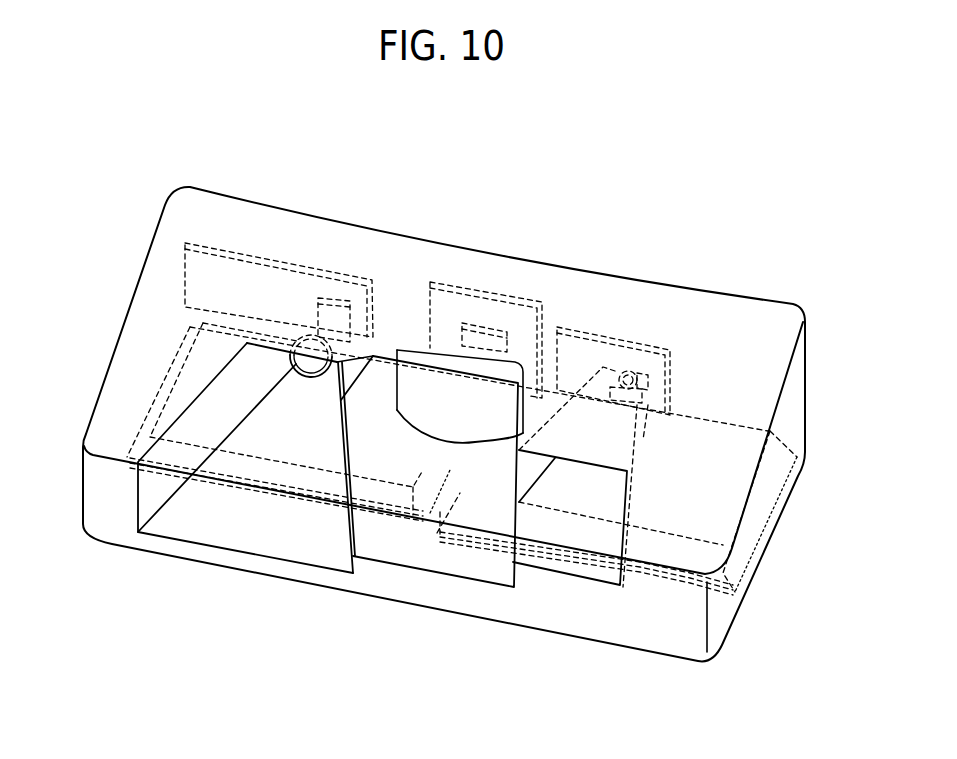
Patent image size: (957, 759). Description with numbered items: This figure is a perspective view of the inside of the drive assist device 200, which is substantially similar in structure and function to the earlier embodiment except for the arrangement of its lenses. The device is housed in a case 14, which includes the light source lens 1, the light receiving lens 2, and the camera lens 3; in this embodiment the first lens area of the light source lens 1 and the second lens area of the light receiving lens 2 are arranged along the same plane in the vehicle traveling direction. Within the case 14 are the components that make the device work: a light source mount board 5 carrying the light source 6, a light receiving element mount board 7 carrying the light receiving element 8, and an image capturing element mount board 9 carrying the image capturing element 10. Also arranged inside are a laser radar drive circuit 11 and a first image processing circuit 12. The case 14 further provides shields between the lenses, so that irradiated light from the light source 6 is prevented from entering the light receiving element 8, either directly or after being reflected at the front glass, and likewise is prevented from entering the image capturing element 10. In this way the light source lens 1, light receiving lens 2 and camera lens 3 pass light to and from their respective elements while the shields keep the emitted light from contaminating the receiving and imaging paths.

The drive assist device 200 is at (208, 139).
The case 14 is at (138, 283).
The image capturing element mount board 9 is at (240, 277).
The camera lens 3 is at (311, 355).
The image capturing element 10 is at (333, 313).
The light receiving element mount board 7 is at (452, 403).
The light receiving lens 2 is at (453, 400).
The light receiving element 8 is at (488, 337).
The light source mount board 5 is at (577, 350).
The light source lens 1 is at (610, 380).
The light source 6 is at (637, 380).
The first image processing circuit 12 is at (275, 472).
The laser radar drive circuit 11 is at (492, 517).